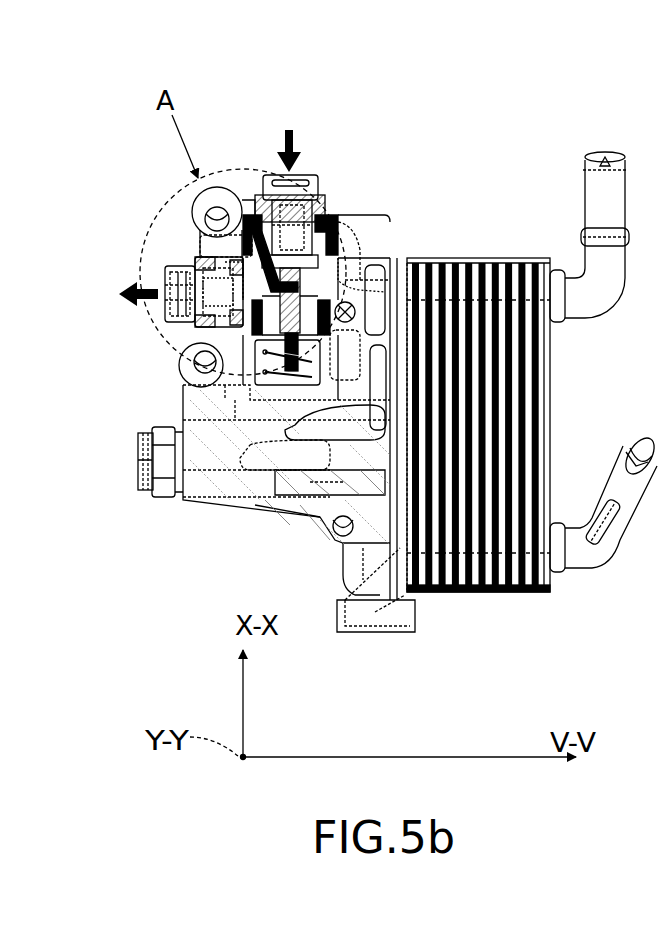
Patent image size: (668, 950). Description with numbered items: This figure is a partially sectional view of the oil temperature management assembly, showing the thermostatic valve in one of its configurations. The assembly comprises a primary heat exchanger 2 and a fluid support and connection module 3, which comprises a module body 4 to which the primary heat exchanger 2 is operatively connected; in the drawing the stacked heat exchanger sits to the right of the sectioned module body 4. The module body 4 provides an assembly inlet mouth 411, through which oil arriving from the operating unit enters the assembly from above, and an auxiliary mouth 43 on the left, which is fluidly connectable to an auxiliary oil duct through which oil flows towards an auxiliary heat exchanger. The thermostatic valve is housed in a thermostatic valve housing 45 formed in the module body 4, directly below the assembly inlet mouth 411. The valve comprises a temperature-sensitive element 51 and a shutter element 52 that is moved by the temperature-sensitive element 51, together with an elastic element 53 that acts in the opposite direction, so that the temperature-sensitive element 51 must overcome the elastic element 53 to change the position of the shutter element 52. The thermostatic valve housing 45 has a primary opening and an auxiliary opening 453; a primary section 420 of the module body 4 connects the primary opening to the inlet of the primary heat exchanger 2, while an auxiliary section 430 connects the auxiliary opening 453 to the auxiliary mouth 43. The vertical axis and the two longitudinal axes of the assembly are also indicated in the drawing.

The primary heat exchanger 2 is at (476, 604).
The fluid support and connection module 3 is at (368, 638).
The module body 4 is at (258, 418).
The auxiliary mouth 43 is at (203, 300).
The thermostatic valve housing 45 is at (247, 212).
The temperature-sensitive element 51 is at (292, 236).
The shutter element 52 is at (360, 272).
The elastic element 53 is at (258, 348).
The assembly inlet mouth 411 is at (263, 228).
The primary section 420 is at (372, 288).
The auxiliary section 430 is at (240, 298).
The auxiliary opening 453 is at (255, 292).